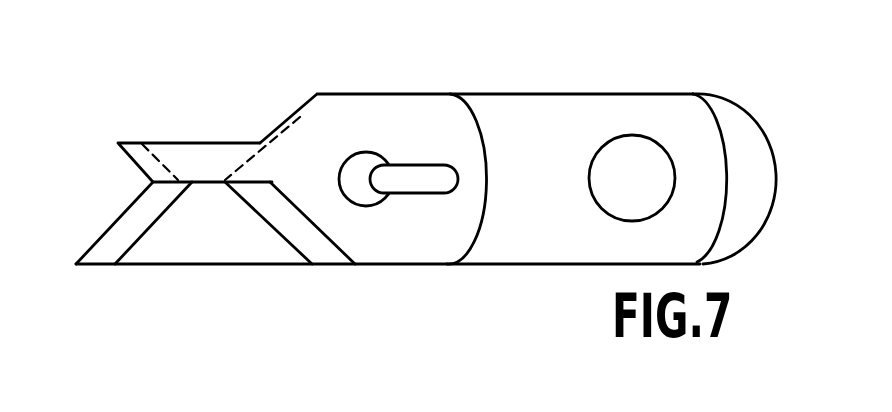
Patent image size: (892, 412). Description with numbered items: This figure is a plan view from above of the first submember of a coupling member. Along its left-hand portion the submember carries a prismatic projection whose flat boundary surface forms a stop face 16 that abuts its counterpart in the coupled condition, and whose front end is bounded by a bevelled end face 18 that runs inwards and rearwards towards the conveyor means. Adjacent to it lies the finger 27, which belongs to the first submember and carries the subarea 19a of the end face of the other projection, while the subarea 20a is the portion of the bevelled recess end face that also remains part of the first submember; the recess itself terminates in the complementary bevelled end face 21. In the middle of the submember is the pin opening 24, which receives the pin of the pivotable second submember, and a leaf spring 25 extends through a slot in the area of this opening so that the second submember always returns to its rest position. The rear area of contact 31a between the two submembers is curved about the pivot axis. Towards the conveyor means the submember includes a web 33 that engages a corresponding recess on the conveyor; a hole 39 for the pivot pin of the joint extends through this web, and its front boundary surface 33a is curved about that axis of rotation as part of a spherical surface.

The stop face 16 is at (230, 251).
The end face 18 is at (118, 238).
The subarea of the end face 19a is at (140, 164).
The subarea of the end face 20a is at (318, 242).
The end face 21 is at (300, 117).
The pin opening 24 is at (362, 173).
The leaf spring 25 is at (420, 183).
The finger 27 is at (210, 157).
The rear area of contact 31a is at (477, 210).
The web 33 is at (647, 110).
The front boundary surface of the web 33a is at (747, 173).
The hole 39 is at (625, 177).